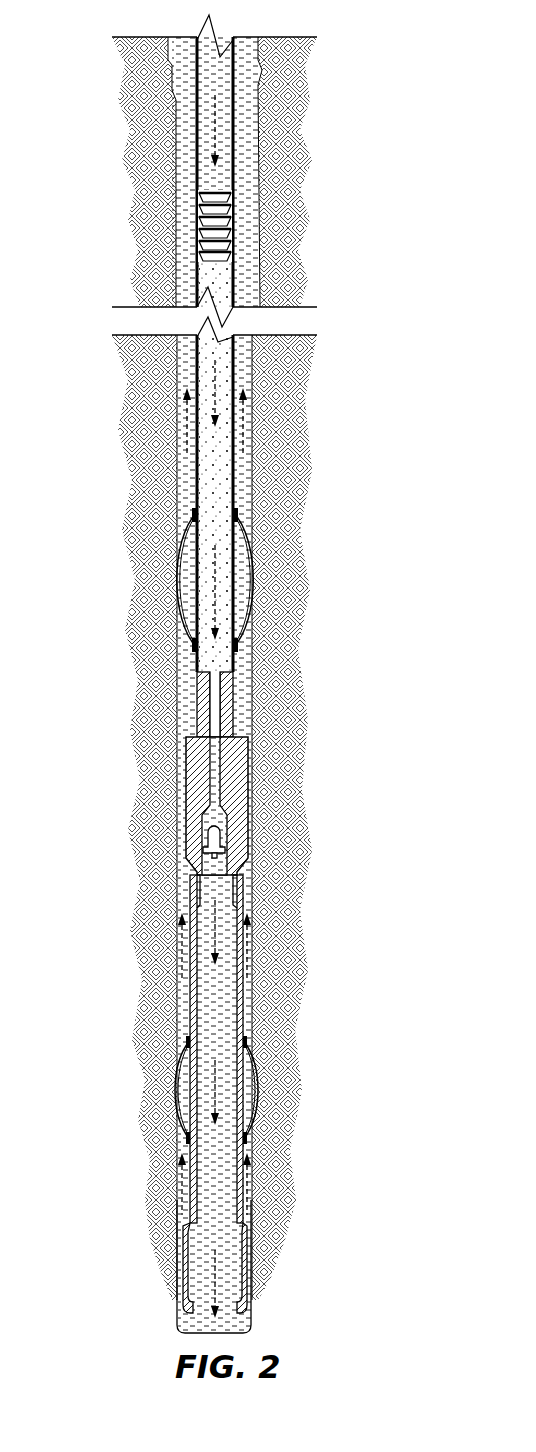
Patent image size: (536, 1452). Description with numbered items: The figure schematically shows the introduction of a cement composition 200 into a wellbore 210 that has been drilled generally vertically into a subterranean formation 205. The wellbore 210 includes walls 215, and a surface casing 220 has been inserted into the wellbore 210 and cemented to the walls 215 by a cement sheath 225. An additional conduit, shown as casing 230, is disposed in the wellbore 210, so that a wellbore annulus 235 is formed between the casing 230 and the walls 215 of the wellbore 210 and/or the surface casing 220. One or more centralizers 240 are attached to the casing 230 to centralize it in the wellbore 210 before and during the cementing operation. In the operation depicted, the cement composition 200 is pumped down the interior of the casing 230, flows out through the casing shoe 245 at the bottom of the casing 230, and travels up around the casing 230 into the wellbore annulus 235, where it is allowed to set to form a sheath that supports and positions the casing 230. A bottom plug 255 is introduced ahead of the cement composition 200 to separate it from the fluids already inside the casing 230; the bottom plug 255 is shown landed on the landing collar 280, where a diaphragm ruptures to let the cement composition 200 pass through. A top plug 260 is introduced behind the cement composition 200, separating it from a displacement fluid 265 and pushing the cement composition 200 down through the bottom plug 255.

The cement composition 200 is at (214, 505).
The subterranean formation 205 is at (438, 781).
The wellbore 210 is at (263, 550).
The walls 215 is at (258, 200).
The surface casing 220 is at (243, 50).
The cement sheath 225 is at (172, 92).
The casing 230 is at (236, 462).
The wellbore annulus 235 is at (192, 480).
The centralizers 240 is at (176, 1088).
The casing shoe 245 is at (185, 1275).
The bottom plug 255 is at (203, 690).
The top plug 260 is at (200, 222).
The displacement fluid 265 is at (217, 133).
The landing collar 280 is at (192, 778).